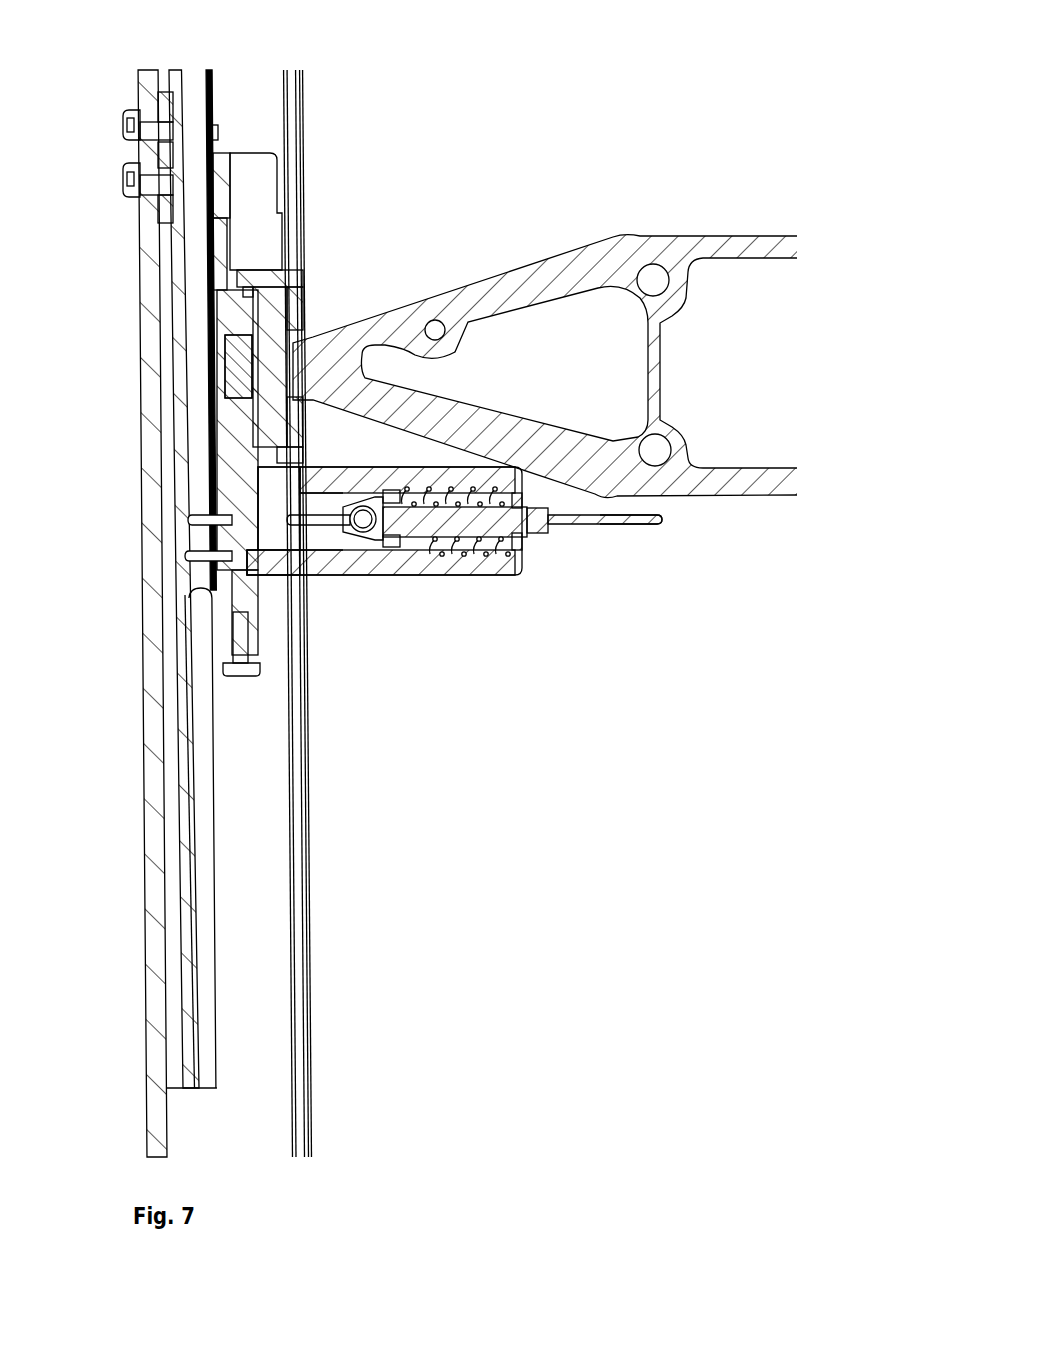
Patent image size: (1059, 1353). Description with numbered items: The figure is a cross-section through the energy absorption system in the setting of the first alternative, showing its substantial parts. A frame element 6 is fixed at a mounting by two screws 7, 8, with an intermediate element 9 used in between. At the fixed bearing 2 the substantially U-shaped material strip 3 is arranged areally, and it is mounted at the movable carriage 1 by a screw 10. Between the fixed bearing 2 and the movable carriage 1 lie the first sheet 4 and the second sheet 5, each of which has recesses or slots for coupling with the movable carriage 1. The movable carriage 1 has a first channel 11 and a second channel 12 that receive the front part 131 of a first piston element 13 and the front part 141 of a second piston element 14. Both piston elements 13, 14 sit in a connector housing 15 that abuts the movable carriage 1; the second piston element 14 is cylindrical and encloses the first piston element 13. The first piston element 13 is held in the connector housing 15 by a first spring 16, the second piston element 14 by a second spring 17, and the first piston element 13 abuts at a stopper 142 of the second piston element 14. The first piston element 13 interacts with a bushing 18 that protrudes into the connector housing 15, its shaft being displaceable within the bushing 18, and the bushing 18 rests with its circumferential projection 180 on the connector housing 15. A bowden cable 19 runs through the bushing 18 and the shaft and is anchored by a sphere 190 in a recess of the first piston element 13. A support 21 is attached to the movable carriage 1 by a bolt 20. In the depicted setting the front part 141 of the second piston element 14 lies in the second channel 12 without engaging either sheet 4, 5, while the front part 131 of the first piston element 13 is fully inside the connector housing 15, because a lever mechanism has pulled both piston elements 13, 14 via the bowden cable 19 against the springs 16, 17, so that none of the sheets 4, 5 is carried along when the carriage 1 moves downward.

The movable carriage 1 is at (227, 207).
The fixed bearing 2 is at (178, 225).
The material strip 3 is at (188, 903).
The first sheet 4 is at (209, 115).
The second sheet 5 is at (215, 118).
The frame element 6 is at (132, 737).
The screw 7 is at (127, 173).
The screw 8 is at (130, 128).
The intermediate element 9 is at (158, 102).
The screw 10 is at (240, 676).
The first channel 11 is at (222, 520).
The second channel 12 is at (222, 552).
The first piston element 13 is at (375, 493).
The second piston element 14 is at (340, 482).
The connector housing 15 is at (523, 548).
The first spring 16 is at (458, 537).
The second spring 17 is at (477, 550).
The bushing 18 is at (537, 530).
The bowden cable 19 is at (617, 520).
The bolt 20 is at (275, 277).
The support 21 is at (655, 240).
The front part of first piston element 131 is at (300, 523).
The front part of second piston element 141 is at (249, 551).
The stopper 142 is at (390, 545).
The circumferential projection 180 is at (522, 570).
The sphere 190 is at (363, 517).